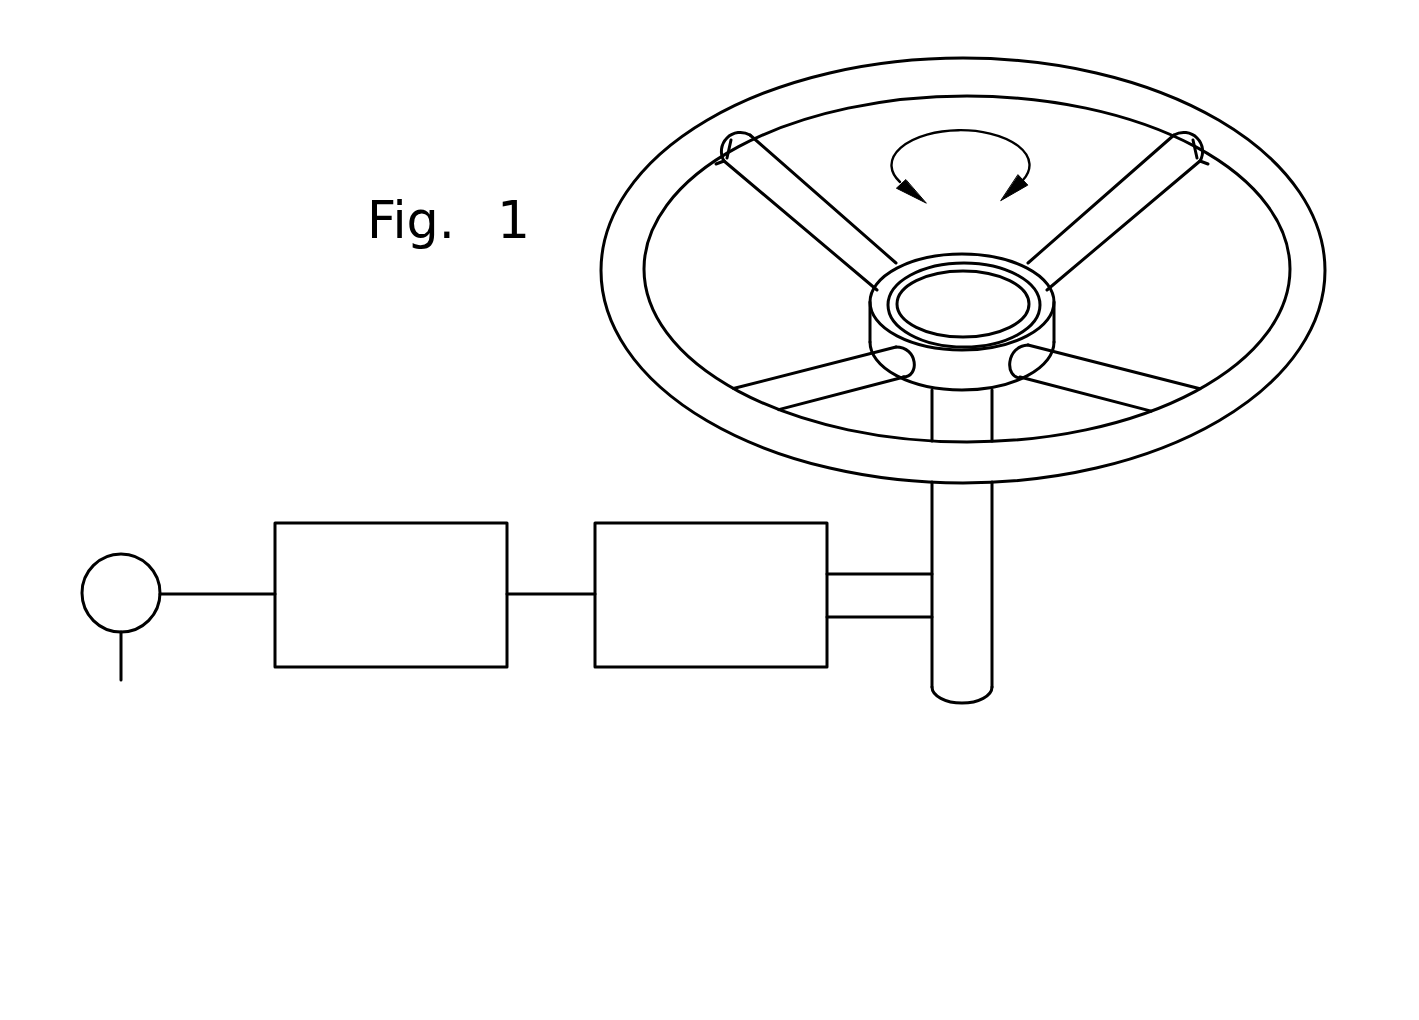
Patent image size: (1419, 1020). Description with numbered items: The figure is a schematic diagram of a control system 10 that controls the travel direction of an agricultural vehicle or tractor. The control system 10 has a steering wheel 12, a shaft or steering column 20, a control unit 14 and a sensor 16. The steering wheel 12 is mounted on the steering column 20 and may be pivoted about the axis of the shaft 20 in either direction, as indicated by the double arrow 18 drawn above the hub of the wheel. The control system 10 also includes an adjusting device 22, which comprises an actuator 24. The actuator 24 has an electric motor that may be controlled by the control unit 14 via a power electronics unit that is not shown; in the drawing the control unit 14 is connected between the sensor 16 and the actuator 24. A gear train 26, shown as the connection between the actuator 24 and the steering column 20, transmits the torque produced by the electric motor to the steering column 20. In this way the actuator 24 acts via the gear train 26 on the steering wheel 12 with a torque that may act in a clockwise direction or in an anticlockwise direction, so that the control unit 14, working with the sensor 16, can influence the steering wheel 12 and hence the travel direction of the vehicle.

The control system 10 is at (1318, 115).
The steering wheel 12 is at (1288, 325).
The control unit 14 is at (391, 595).
The sensor 16 is at (178, 617).
The double arrow 18 is at (910, 142).
The shaft or steering column 20 is at (965, 541).
The adjusting device 22 is at (693, 737).
The actuator 24 is at (667, 595).
The gear train 26 is at (870, 603).